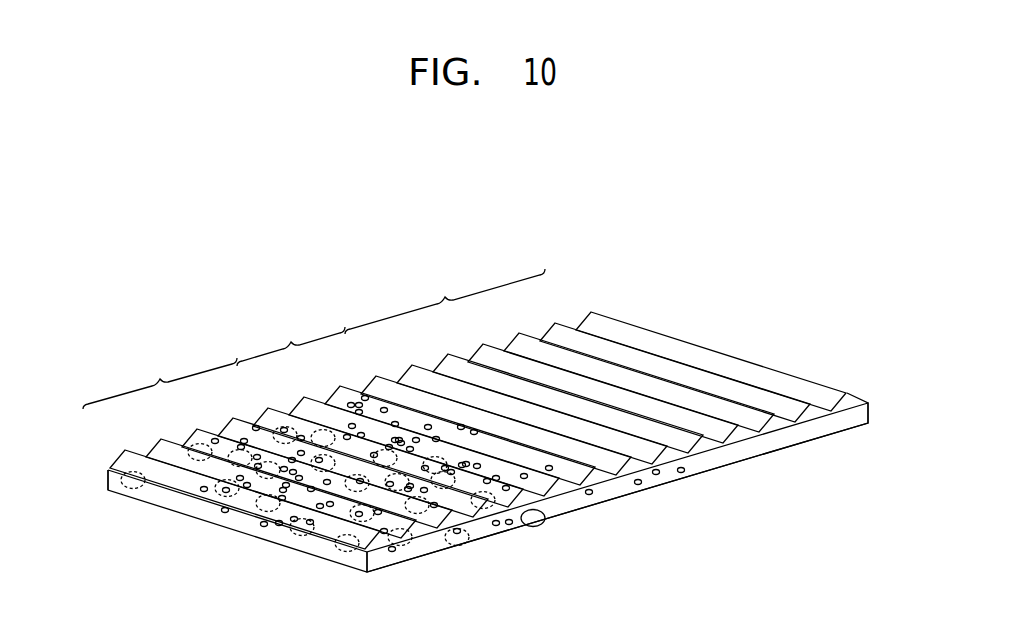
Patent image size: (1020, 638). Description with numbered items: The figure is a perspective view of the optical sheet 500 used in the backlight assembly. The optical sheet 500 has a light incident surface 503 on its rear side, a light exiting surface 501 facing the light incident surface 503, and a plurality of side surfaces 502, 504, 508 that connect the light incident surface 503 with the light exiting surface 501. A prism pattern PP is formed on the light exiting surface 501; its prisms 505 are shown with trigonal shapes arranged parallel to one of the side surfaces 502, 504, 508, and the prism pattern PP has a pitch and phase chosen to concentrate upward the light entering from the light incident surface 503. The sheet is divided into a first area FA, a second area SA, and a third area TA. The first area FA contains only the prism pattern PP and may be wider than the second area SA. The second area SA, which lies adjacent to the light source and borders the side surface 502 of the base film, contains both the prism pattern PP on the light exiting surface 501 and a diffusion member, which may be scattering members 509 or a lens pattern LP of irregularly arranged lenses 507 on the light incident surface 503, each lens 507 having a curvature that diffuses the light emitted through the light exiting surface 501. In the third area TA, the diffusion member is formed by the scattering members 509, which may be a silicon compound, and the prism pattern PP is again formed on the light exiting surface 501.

The optical sheet 500 is at (426, 209).
The light exiting surface 501 is at (722, 350).
The side surface 502 is at (204, 512).
The light incident surface 503 is at (592, 512).
The side surface 504 is at (707, 458).
The prism 505 is at (803, 387).
The lens 507 is at (463, 548).
The side surface 508 is at (123, 452).
The scattering member 509 is at (319, 552).
The prism pattern PP is at (655, 306).
The first area FA is at (445, 299).
The third area TA is at (291, 338).
The second area SA is at (160, 380).
The lens pattern LP is at (286, 561).